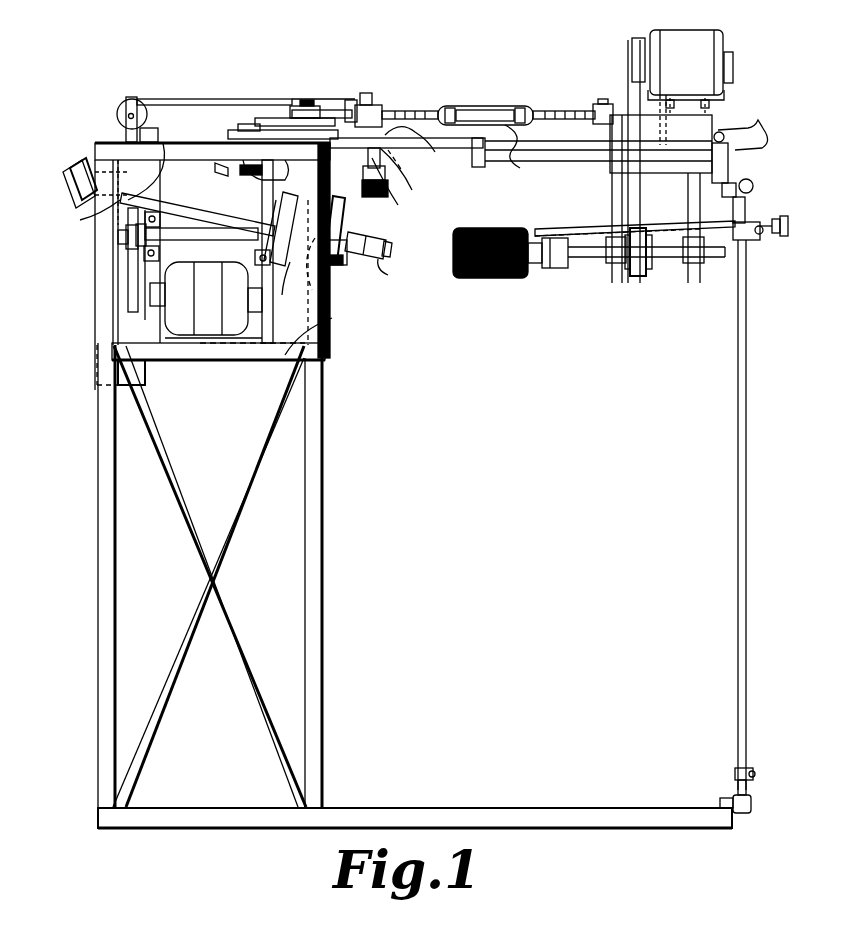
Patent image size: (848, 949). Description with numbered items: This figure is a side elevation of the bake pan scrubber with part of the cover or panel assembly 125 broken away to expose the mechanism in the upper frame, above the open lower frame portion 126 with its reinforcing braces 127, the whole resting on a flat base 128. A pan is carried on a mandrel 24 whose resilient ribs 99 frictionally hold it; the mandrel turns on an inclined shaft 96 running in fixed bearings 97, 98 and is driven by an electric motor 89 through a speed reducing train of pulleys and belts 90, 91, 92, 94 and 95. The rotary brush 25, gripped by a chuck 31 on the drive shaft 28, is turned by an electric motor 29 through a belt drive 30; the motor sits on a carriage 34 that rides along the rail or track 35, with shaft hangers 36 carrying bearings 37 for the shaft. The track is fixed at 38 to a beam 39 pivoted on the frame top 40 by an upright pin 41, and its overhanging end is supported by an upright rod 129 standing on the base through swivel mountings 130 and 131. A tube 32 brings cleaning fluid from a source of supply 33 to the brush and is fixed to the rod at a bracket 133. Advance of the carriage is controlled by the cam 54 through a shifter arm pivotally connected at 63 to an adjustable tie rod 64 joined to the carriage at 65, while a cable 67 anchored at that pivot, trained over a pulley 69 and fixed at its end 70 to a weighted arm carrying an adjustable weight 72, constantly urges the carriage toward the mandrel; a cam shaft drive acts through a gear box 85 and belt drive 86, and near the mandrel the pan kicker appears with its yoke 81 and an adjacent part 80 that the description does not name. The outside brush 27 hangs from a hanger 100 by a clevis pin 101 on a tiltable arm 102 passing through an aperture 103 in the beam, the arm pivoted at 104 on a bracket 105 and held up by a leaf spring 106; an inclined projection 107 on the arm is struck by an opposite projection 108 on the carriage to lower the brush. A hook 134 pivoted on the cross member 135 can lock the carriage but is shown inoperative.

The mandrel 24 is at (390, 271).
The rotating brush 25 is at (490, 278).
The outside brush 27 is at (382, 197).
The drive shaft 28 is at (666, 257).
The electric motor 29 is at (710, 42).
The belt drive 30 is at (620, 202).
The chuck 31 is at (560, 268).
The tube 32 is at (537, 229).
The source of supply 33 is at (784, 236).
The motor carriage 34 is at (705, 130).
The rail or track 35 is at (574, 161).
The shaft hangers 36 is at (630, 215).
The bearings 37 is at (616, 263).
The fixed support 38 is at (485, 162).
The beam 39 is at (430, 138).
The frame top 40 is at (185, 158).
The upright pin or bolt 41 is at (150, 128).
The cam 54 is at (252, 125).
The pivotal connection 63 is at (368, 93).
The adjustable tie rod 64 is at (481, 108).
The pivotal connection 65 is at (603, 104).
The cable 67 is at (190, 99).
The pulley 69 is at (124, 110).
The cable end 70 is at (118, 337).
The adjustable weight 72 is at (135, 385).
The block 80 is at (345, 262).
The yoke 81 is at (350, 208).
The speed reducing gear box 85 is at (228, 170).
The belt drive 86 is at (218, 225).
The electric motor 89 is at (205, 318).
The pulley and belt train element 90 is at (132, 305).
The pulley and belt train element 91 is at (138, 270).
The pulley and belt train element 92 is at (132, 248).
The pulley and belt train element 94 is at (262, 205).
The pulley and belt train element 95 is at (287, 278).
The mandrel shaft 96 is at (196, 212).
The bearing 97 is at (84, 170).
The bearing 98 is at (331, 296).
The resilient ribs 99 is at (386, 235).
The hanger 100 is at (411, 174).
The clevis pin 101 is at (401, 188).
The tiltable arm 102 is at (333, 118).
The aperture 103 is at (411, 167).
The pivotal mounting 104 is at (290, 115).
The bracket 105 is at (270, 150).
The leaf spring 106 is at (419, 147).
The inclined projection 107 is at (400, 125).
The inclined projection 108 is at (521, 154).
The cover or panel assembly 125 is at (365, 328).
The lower frame portion 126 is at (323, 614).
The reinforcing trusses or braces 127 is at (215, 588).
The flat base 128 is at (666, 812).
The upright support rod 129 is at (738, 586).
The upper mounting 130 is at (745, 194).
The lower mounting 131 is at (760, 798).
The bracket 133 is at (748, 215).
The hook or latch 134 is at (775, 124).
The cross member 135 is at (728, 158).